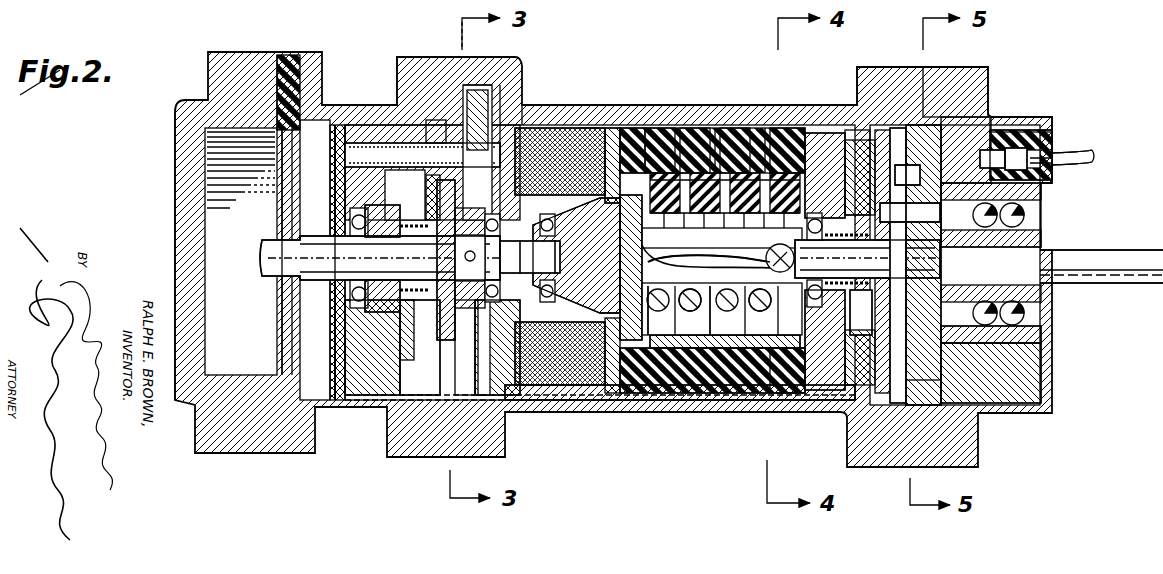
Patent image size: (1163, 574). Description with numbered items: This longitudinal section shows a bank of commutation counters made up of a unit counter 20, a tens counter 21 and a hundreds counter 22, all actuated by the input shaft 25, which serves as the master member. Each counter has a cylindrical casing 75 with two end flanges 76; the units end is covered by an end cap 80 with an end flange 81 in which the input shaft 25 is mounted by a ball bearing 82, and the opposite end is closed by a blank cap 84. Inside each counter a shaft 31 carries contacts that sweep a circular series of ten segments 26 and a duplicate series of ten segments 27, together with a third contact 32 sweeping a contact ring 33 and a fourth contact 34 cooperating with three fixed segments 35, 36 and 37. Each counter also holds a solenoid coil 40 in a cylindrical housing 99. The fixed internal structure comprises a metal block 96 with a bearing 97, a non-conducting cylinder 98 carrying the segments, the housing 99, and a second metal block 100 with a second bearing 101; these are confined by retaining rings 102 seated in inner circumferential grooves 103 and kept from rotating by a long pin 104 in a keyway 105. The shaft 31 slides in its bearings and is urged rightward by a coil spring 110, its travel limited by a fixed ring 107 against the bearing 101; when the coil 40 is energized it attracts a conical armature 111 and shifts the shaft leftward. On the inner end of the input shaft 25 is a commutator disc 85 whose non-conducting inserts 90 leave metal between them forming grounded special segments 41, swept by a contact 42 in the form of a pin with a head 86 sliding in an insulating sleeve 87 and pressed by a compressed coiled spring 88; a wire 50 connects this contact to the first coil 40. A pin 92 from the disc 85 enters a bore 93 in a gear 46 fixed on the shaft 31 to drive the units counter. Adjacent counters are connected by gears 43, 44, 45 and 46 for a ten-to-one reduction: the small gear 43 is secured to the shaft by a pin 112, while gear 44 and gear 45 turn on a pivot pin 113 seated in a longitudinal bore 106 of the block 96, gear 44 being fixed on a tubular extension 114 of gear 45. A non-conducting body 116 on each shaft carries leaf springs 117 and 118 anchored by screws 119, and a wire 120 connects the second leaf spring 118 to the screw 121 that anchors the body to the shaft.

The unit counter 20 is at (856, 70).
The 10's counter 21 is at (400, 56).
The 100's counter 22 is at (297, 52).
The input shaft 25 is at (1133, 256).
The circular series of ten segments 26 is at (735, 135).
The second circular series of ten segments 27 is at (697, 135).
The shaft 31 is at (278, 236).
The third contact 32 is at (785, 135).
The contact ring 33 is at (766, 135).
The fourth contact 34 is at (655, 210).
The fixed segment 35 is at (665, 135).
The fixed segment 36 is at (632, 132).
The fixed segment 37 is at (655, 395).
The solenoid coil 40 is at (565, 140).
The special segments 41 is at (938, 140).
The contact 42 is at (994, 135).
The small gear 43 is at (470, 280).
The gear 44 is at (505, 110).
The small gear 45 is at (438, 130).
The gear 46 is at (412, 318).
The wire 50 is at (1062, 168).
The cylindrical casing 75 is at (588, 125).
The end flanges 76 is at (480, 62).
The end cap 80 is at (1050, 365).
The end flange 81 is at (950, 70).
The ball bearing 82 is at (1030, 215).
The blank cap 84 is at (178, 115).
The commutator disc 85 is at (930, 355).
The head 86 is at (1012, 150).
The insulating sleeve 87 is at (1020, 155).
The compressed coiled spring 88 is at (1052, 133).
The inserts 90 is at (935, 383).
The pin 92 is at (880, 212).
The bore 93 is at (905, 200).
The metal block 96 is at (365, 405).
The bearing 97 is at (370, 296).
The cylinder 98 is at (788, 395).
The cylindrical housing 99 is at (612, 130).
The second metal block 100 is at (298, 318).
The second bearing 101 is at (298, 292).
The retaining rings 102 is at (490, 372).
The inner circumferential grooves 103 is at (860, 135).
The long pin 104 is at (334, 405).
The keyway 105 is at (575, 402).
The longitudinal bore 106 is at (815, 140).
The fixed ring 107 is at (478, 305).
The coil spring 110 is at (395, 232).
The conical armature 111 is at (634, 267).
The pin 112 is at (500, 257).
The pivot pin 113 is at (383, 150).
The tubular extension 114 is at (522, 125).
The body 116 is at (715, 135).
The leaf spring 117 is at (750, 395).
The second leaf spring 118 is at (695, 395).
The screws 119 is at (690, 308).
The wire 120 is at (680, 280).
The screw 121 is at (795, 258).